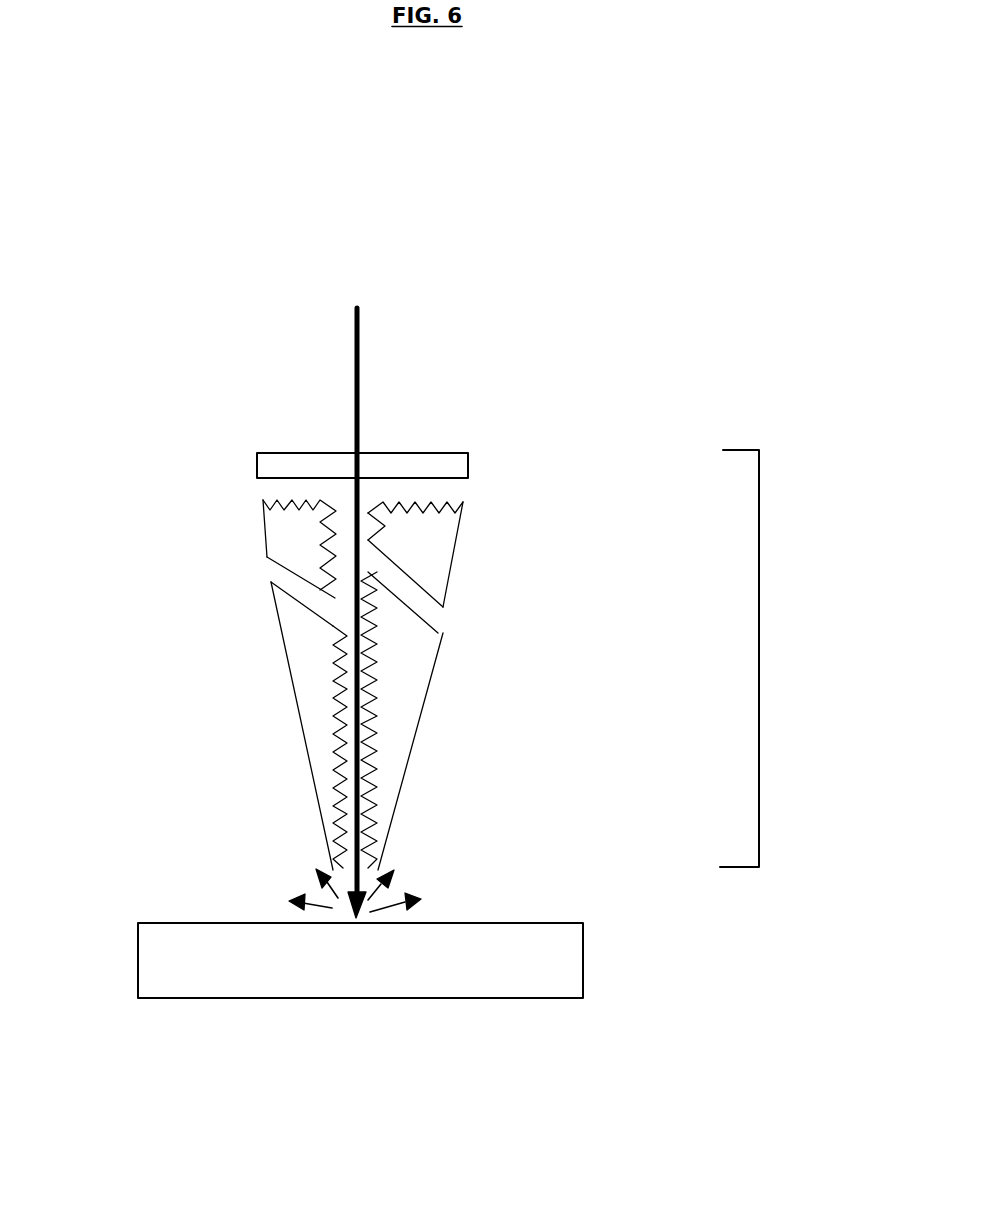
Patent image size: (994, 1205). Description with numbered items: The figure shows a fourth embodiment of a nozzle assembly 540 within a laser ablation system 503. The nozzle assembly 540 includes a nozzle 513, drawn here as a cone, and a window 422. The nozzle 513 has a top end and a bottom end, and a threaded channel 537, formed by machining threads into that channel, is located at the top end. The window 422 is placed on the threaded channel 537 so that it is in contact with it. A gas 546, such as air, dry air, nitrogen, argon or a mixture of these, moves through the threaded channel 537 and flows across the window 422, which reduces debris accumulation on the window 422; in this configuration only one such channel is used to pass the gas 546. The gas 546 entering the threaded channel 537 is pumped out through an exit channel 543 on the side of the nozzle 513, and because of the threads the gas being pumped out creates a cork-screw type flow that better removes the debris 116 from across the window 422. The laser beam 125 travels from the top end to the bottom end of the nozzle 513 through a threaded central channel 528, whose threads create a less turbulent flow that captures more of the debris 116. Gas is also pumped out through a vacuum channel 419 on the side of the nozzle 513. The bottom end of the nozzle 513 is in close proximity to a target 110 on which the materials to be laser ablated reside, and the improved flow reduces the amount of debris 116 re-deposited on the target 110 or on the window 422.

The laser beam 125 is at (351, 287).
The window 422 is at (303, 432).
The threaded channel 537 is at (257, 492).
The gas 546 is at (236, 495).
The vacuum channel 419 is at (267, 568).
The nozzle 513 is at (603, 564).
The exit channel 543 is at (447, 620).
The threaded central channel 528 is at (360, 753).
The debris 116 is at (418, 867).
The nozzle assembly 540 is at (810, 682).
The target 110 is at (343, 985).
The laser ablation system 503 is at (384, 1127).